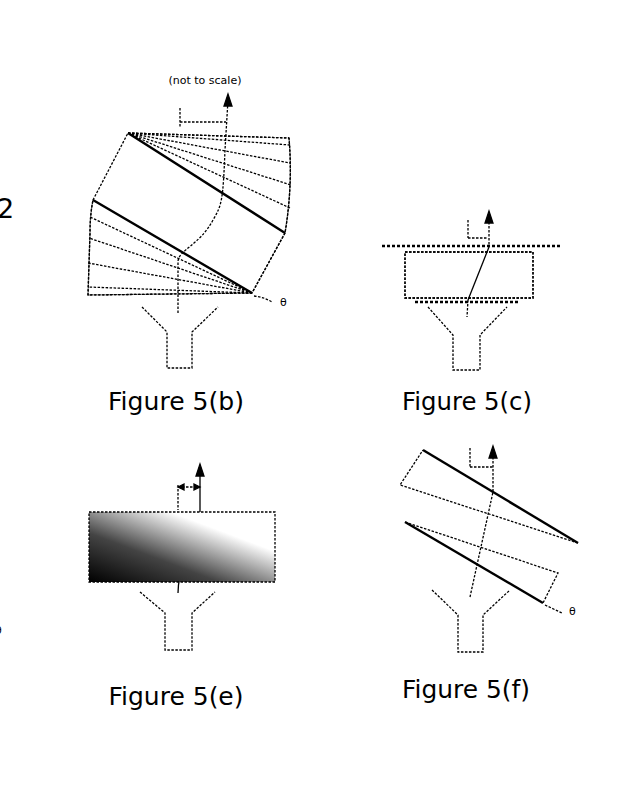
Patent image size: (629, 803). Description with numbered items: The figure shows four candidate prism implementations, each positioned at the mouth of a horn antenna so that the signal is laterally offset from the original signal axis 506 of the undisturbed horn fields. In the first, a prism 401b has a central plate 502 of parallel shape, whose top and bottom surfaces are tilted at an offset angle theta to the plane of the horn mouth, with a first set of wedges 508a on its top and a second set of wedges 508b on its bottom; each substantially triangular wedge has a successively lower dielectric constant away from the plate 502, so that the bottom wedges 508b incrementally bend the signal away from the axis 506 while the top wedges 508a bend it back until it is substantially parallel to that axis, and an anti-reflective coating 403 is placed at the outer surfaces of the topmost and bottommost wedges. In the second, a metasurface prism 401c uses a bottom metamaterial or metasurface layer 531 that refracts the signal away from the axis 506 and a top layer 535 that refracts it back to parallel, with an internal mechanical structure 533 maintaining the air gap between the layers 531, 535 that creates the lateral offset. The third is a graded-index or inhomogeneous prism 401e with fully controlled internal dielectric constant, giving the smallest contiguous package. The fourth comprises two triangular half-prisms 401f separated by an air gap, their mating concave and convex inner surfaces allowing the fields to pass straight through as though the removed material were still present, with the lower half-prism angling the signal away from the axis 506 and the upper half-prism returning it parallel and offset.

In FIG. 5B, the original signal axis 506 is at (177, 117).
In FIG. 5C, the original signal axis 506 is at (467, 233).
In FIG. 5E, the original signal axis 506 is at (177, 497).
In FIG. 5F, the original signal axis 506 is at (468, 467).
In FIG. 5B, the anti-reflective coating 403 is at (262, 137).
In FIG. 5B, the first set of wedges 508a is at (292, 177).
In FIG. 5B, the second set of wedges 508b is at (88, 240).
In FIG. 5B, the prism 401b is at (175, 223).
In FIG. 5B, the central plate 502 is at (287, 280).
In FIG. 5C, the top metamaterial or metasurface layer 535 is at (456, 233).
In FIG. 5C, the mechanical structure 533 is at (403, 277).
In FIG. 5C, the bottom metamaterial or metasurface layer 531 is at (413, 303).
In FIG. 5C, the prism 401c is at (513, 275).
In FIG. 5E, the graded-index prism 401e is at (148, 547).
In FIG. 5F, the half-prisms 401f is at (461, 526).